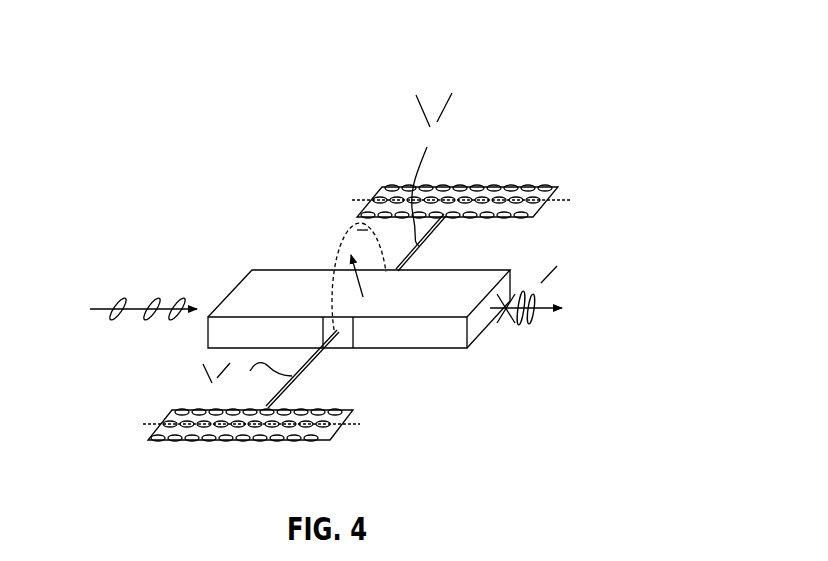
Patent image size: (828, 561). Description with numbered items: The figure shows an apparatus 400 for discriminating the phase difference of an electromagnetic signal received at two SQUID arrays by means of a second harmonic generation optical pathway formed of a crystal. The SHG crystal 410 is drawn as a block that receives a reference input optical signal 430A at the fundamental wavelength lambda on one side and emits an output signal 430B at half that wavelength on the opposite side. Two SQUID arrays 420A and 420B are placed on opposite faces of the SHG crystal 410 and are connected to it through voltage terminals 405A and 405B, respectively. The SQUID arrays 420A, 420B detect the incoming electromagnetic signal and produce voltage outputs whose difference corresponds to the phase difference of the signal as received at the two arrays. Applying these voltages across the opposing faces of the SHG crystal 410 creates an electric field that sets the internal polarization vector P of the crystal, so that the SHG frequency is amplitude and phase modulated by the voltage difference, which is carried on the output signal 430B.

The apparatus for discriminating a phase difference 400 is at (286, 248).
The voltage terminal 405A is at (348, 348).
The voltage terminal 405B is at (420, 260).
The second harmonic generation crystal 410 is at (420, 348).
The SQUID array 420A is at (338, 428).
The SQUID array 420B is at (540, 219).
The reference input optical signal 430A is at (107, 306).
The output signal 430B is at (547, 317).